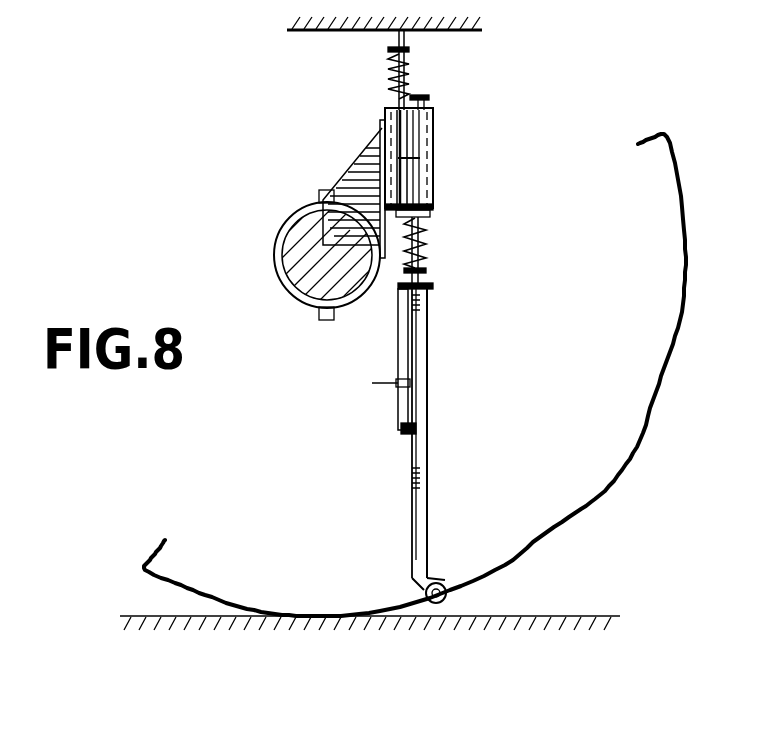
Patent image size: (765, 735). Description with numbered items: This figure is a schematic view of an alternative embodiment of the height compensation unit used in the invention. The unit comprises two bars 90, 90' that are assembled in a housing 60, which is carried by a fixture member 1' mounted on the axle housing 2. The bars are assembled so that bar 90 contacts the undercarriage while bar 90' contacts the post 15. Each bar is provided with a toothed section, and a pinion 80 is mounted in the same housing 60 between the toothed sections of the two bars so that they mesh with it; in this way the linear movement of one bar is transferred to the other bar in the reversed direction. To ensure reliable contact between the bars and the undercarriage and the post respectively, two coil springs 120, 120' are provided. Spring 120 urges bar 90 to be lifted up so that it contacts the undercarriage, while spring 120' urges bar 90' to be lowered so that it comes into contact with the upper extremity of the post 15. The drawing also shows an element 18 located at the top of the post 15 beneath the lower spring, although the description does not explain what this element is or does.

The bar 90 is at (376, 70).
The coil spring 120 is at (429, 69).
The bar 90' is at (445, 90).
The pinion 80 is at (415, 158).
The housing 60 is at (392, 122).
The fixture member 1' is at (347, 186).
The axle housing 2 is at (300, 233).
The coil spring 120' is at (449, 250).
The plate 18 is at (433, 285).
The post 15 is at (427, 483).